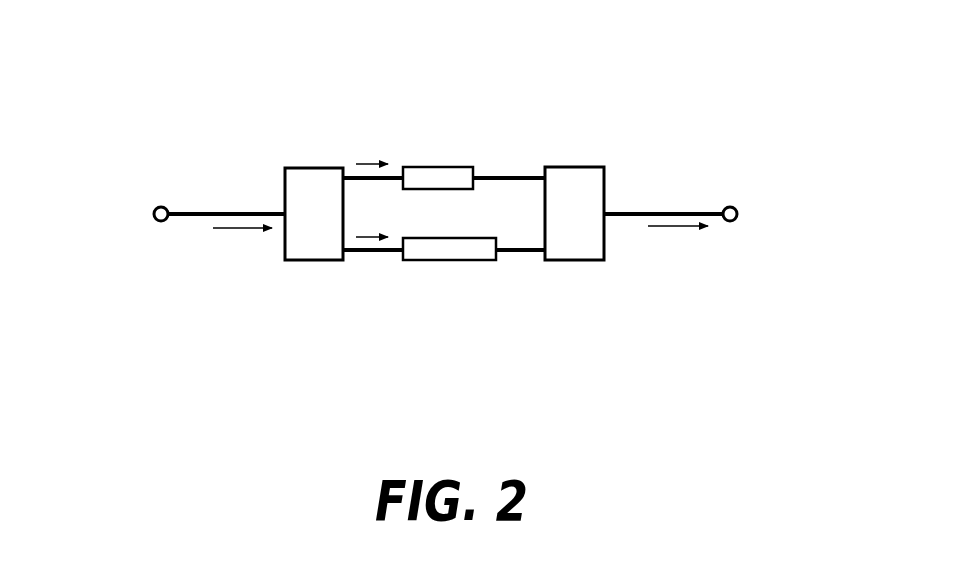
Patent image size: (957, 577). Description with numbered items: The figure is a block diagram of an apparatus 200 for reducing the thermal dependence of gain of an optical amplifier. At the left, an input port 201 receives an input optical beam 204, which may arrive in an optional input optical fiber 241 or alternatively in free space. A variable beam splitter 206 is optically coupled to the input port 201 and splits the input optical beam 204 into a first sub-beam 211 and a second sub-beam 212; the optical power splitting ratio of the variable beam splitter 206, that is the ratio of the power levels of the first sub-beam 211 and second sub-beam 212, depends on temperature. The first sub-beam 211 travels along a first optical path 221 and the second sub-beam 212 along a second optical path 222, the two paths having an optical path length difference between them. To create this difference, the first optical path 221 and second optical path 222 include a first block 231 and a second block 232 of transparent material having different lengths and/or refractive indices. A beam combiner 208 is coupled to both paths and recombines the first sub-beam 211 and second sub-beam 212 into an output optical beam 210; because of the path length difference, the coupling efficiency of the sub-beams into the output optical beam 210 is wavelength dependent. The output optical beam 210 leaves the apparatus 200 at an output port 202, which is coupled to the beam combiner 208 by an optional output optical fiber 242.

The apparatus 200 is at (688, 42).
The input port 201 is at (158, 221).
The output port 202 is at (742, 210).
The input optical beam 204 is at (243, 229).
The variable beam splitter 206 is at (315, 168).
The beam combiner 208 is at (593, 261).
The output optical beam 210 is at (668, 230).
The first sub-beam 211 is at (364, 239).
The second sub-beam 212 is at (372, 163).
The first optical path 221 is at (532, 252).
The second optical path 222 is at (508, 175).
The first block of transparent material 231 is at (437, 261).
The second block of transparent material 232 is at (437, 167).
The input optical fiber 241 is at (228, 210).
The output optical fiber 242 is at (678, 210).